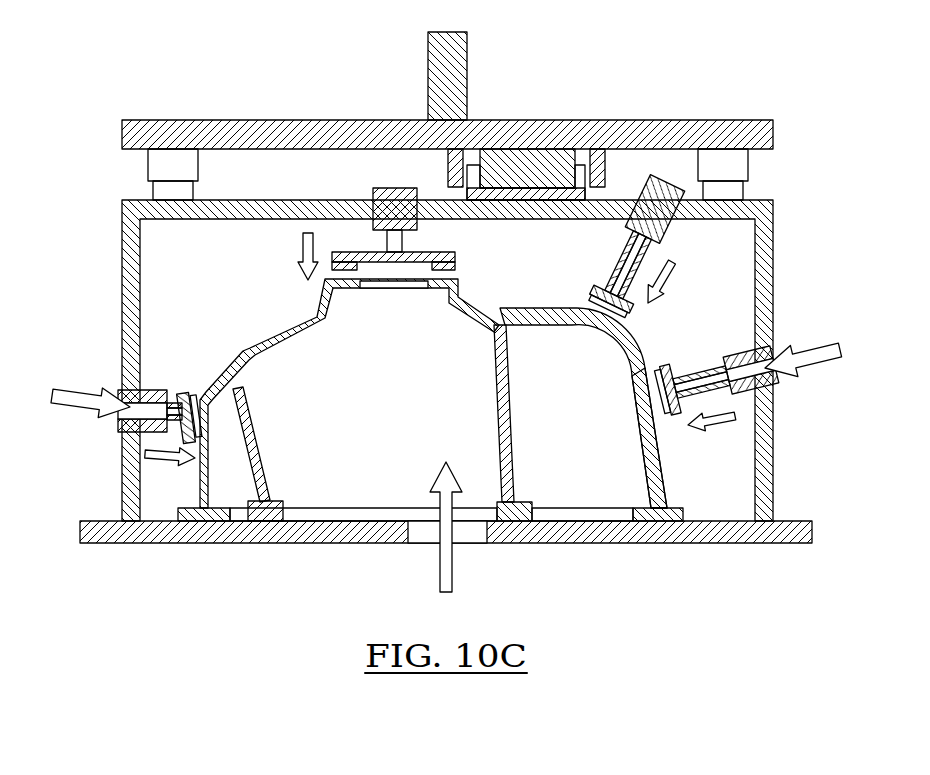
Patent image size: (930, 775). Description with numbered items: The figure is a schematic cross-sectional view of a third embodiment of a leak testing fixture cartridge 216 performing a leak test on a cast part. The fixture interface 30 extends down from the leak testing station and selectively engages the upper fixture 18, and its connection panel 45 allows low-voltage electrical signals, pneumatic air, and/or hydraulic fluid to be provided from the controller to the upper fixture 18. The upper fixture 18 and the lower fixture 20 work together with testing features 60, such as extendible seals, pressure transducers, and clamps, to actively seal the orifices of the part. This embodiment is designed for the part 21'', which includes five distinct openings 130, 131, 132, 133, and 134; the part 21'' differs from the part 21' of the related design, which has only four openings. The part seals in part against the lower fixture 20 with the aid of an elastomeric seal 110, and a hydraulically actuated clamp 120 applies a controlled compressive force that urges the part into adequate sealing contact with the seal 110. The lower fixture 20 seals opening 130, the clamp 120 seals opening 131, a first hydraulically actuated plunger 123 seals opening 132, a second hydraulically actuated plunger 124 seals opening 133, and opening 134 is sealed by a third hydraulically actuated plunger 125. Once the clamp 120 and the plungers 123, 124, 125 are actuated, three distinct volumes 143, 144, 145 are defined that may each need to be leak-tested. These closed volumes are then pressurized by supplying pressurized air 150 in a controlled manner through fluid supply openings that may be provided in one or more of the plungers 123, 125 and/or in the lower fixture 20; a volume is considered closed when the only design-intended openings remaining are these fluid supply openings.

The fixture interface 30 is at (122, 130).
The upper fixture 18 is at (122, 228).
The fixture cartridge 216 is at (70, 278).
The connection panel 45 is at (605, 168).
The testing features 60 is at (379, 180).
The second hydraulically actuated plunger 124 is at (650, 253).
The hydraulically actuated clamp 120 is at (455, 259).
The first hydraulically actuated plunger 123 is at (193, 400).
The third hydraulically actuated plunger 125 is at (723, 396).
The pressurized air 150 is at (452, 573).
The lower fixture 20 is at (80, 528).
The part 21' is at (606, 408).
The part 21'' is at (692, 438).
The opening 131 is at (372, 303).
The opening 132 is at (224, 426).
The opening 133 is at (582, 345).
The opening 134 is at (625, 415).
The volume 144 is at (390, 399).
The volume 145 is at (594, 486).
The elastomeric seal 110 is at (178, 507).
The volume 143 is at (240, 490).
The opening 130 is at (350, 501).